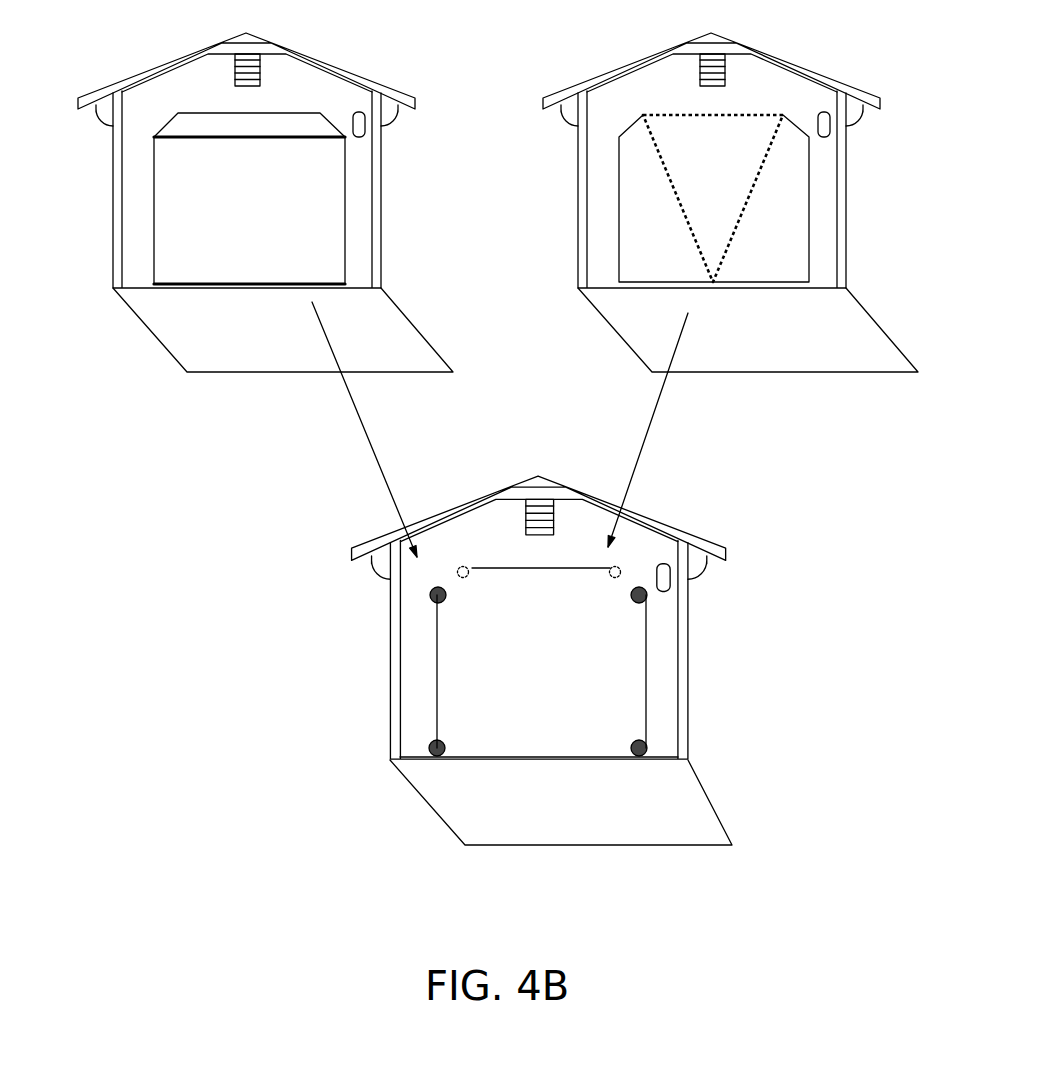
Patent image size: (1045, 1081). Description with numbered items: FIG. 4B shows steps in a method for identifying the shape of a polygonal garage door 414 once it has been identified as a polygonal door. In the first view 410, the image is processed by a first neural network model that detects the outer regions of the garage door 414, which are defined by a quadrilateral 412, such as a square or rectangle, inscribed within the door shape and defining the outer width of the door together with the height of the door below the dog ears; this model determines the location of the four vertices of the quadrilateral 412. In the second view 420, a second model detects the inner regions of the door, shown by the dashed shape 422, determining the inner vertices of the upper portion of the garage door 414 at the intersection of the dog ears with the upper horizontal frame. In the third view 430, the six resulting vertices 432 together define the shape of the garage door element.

The garage with door closed 410 is at (247, 223).
The quadrilateral 412 is at (150, 208).
The garage door 414 is at (233, 252).
The garage with door open and projected pattern 420 is at (730, 220).
The projected triangular light pattern 422 is at (738, 115).
The garage with sensors installed 430 is at (534, 667).
The sensor 432 is at (458, 568).